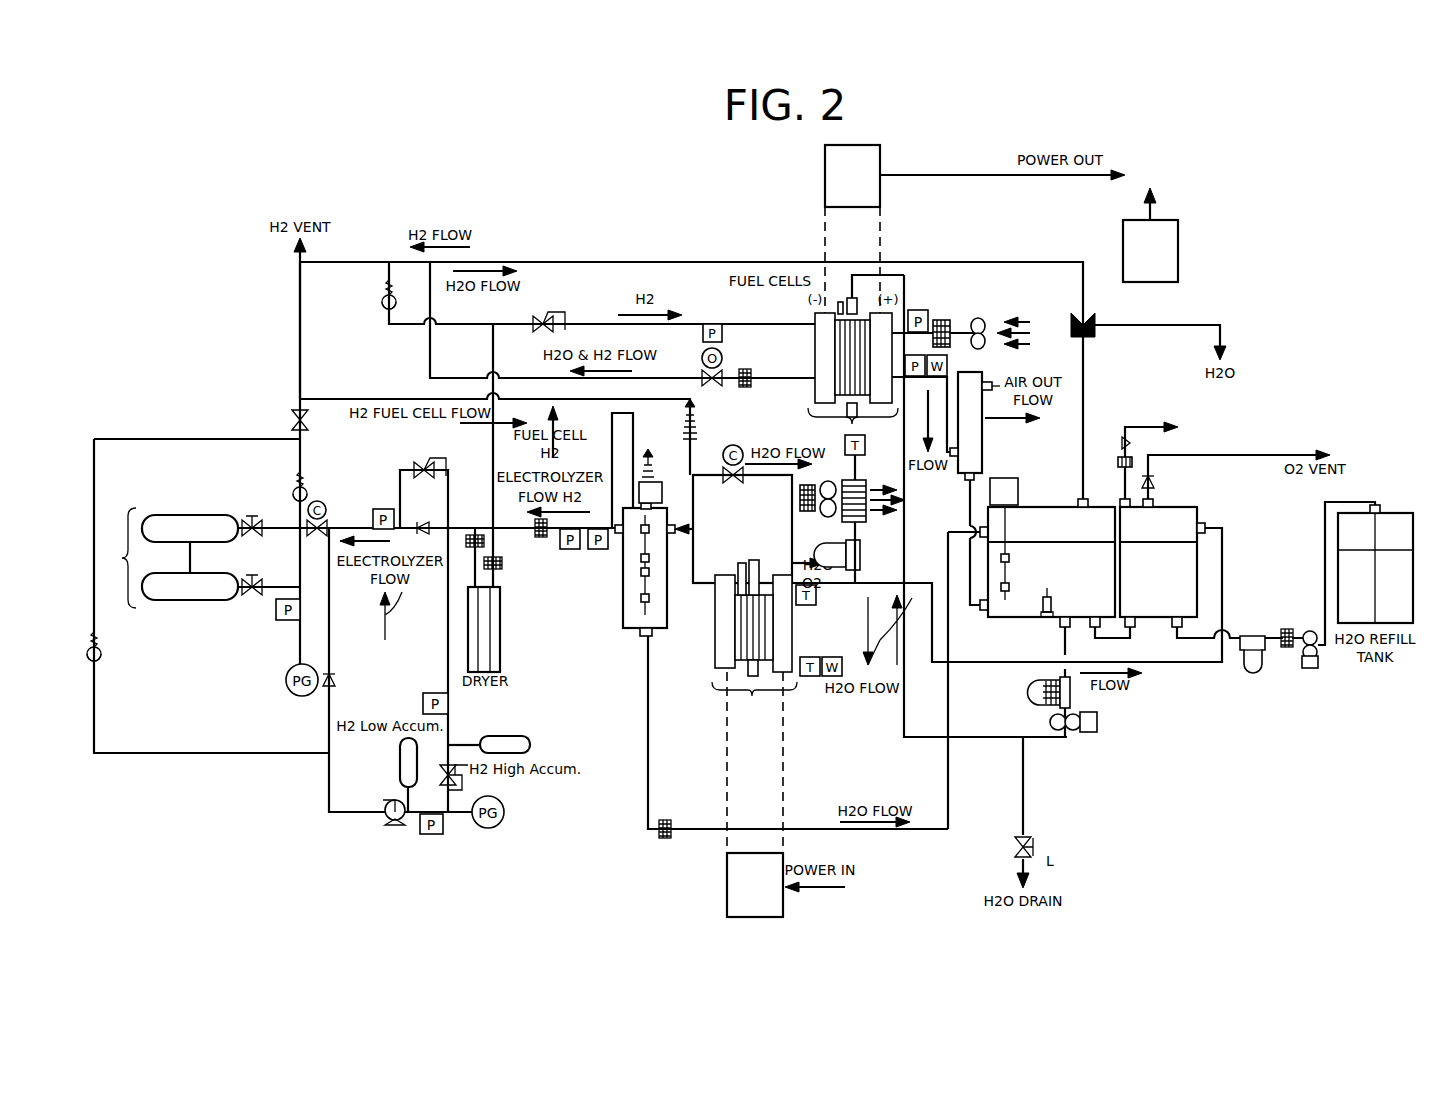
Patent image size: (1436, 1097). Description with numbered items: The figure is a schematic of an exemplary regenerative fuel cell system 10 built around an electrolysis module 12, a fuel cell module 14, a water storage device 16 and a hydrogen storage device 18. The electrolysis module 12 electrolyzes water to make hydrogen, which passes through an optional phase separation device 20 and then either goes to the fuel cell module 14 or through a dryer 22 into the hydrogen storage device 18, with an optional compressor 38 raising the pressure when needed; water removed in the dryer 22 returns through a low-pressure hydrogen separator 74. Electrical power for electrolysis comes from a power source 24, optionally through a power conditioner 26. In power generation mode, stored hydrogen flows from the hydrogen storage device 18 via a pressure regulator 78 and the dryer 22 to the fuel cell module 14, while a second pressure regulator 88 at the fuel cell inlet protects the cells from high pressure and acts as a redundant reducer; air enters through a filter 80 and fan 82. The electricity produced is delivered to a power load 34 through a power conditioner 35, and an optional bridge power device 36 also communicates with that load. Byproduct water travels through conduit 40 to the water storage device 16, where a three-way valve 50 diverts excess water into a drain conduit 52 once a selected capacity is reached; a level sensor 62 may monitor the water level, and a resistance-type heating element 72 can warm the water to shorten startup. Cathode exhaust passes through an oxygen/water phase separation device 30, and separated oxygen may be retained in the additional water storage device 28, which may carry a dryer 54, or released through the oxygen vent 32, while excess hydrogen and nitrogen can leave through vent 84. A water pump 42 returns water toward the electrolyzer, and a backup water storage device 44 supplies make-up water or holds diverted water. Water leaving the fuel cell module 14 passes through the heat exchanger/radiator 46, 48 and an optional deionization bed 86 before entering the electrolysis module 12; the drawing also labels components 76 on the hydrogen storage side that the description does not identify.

The regenerative fuel cell system 10 is at (1230, 178).
The electrolysis module 12 is at (744, 664).
The fuel cell module 14 is at (853, 378).
The water storage device 16 is at (1059, 563).
The hydrogen storage device 18 is at (167, 558).
The phase separation device 20 is at (626, 608).
The dryer 22 is at (502, 648).
The power source 24 is at (834, 888).
The power conditioner 26 is at (755, 885).
The additional water storage device 28 is at (1162, 563).
The oxygen/water phase separation device 30 is at (972, 432).
The oxygen vent 32 is at (1290, 452).
The power load 34 is at (1023, 176).
The power conditioner 35 is at (852, 176).
The bridge power device 36 is at (1150, 235).
The compressor 38 is at (395, 826).
The conduit 40 is at (538, 262).
The water pump 42 is at (1098, 722).
The backup water storage device 44 is at (1375, 564).
The heat exchanger 46 is at (890, 504).
The radiator 48 is at (880, 487).
The three-way valve 50 is at (1090, 318).
The drain conduit 52 is at (1185, 325).
The dryer 54 is at (1110, 462).
The level sensor 62 is at (1008, 528).
The resistance-type heating element 72 is at (1040, 620).
The low-pressure hydrogen separator 74 is at (400, 768).
The tank valves 76 is at (255, 578).
The pressure regulator 78 is at (427, 460).
The filter 80 is at (942, 320).
The fan 82 is at (985, 318).
The vent 84 is at (298, 284).
The deionization bed 86 is at (860, 553).
The second pressure regulator 88 is at (546, 312).